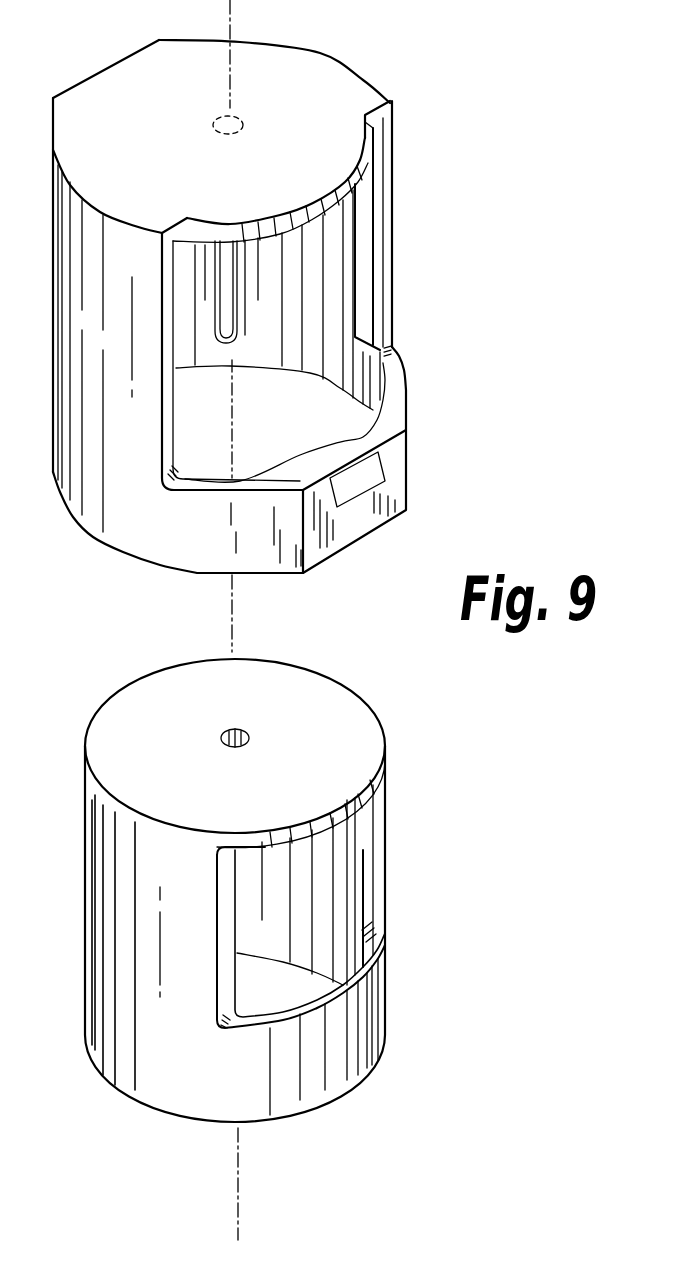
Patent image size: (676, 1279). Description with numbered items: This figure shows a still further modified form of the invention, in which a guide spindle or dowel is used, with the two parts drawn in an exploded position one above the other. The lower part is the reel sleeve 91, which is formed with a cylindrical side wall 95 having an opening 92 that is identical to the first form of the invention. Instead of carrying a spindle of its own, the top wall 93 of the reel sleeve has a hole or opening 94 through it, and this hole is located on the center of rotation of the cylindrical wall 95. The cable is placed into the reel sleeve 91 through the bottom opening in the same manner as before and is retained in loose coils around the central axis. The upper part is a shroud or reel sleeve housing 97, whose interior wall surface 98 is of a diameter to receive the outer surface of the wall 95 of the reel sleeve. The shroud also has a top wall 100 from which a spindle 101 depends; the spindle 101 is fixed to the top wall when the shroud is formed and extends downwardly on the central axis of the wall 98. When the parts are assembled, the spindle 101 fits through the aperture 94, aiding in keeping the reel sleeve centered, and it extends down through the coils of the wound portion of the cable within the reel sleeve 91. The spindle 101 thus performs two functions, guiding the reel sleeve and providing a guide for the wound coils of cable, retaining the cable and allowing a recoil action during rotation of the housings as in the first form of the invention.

The reel sleeve 91 is at (295, 693).
The opening 92 is at (370, 878).
The top wall 93 is at (355, 742).
The hole or opening 94 is at (221, 735).
The side wall 95 is at (283, 1098).
The shroud or reel sleeve housing 97 is at (322, 74).
The interior wall surface 98 is at (275, 297).
The top wall 100 is at (335, 148).
The spindle 101 is at (235, 346).